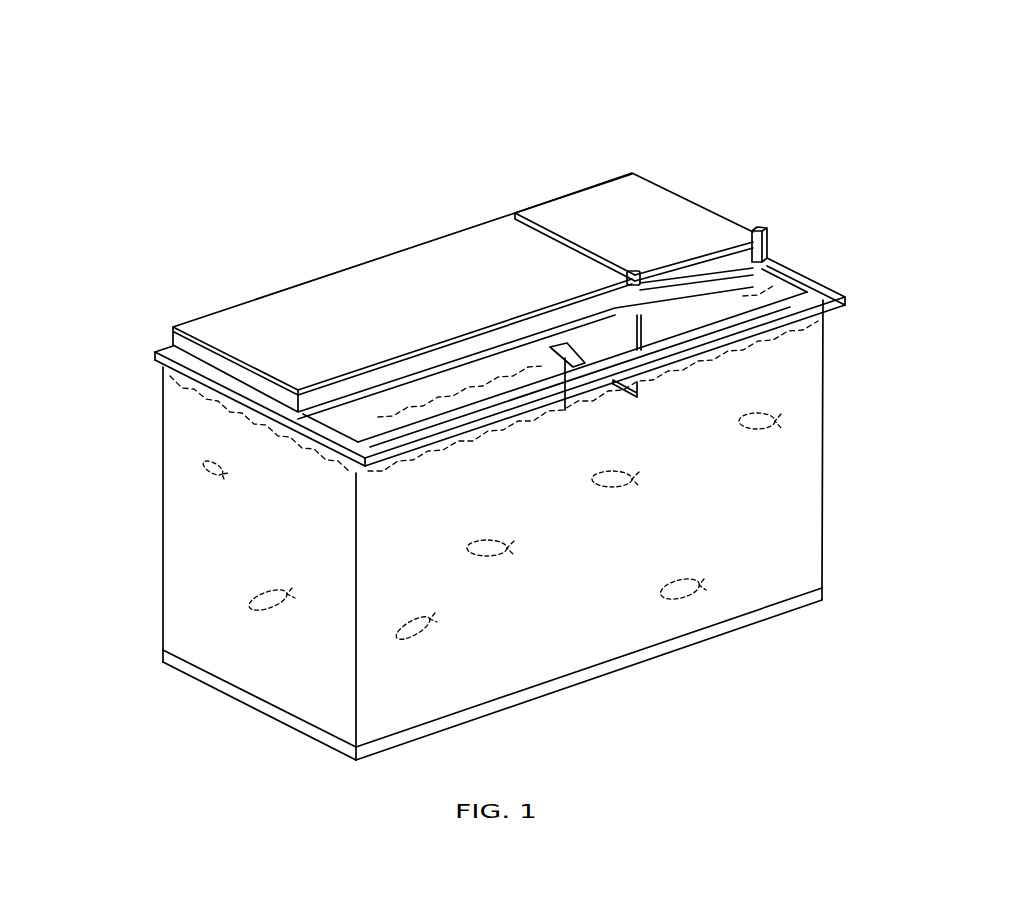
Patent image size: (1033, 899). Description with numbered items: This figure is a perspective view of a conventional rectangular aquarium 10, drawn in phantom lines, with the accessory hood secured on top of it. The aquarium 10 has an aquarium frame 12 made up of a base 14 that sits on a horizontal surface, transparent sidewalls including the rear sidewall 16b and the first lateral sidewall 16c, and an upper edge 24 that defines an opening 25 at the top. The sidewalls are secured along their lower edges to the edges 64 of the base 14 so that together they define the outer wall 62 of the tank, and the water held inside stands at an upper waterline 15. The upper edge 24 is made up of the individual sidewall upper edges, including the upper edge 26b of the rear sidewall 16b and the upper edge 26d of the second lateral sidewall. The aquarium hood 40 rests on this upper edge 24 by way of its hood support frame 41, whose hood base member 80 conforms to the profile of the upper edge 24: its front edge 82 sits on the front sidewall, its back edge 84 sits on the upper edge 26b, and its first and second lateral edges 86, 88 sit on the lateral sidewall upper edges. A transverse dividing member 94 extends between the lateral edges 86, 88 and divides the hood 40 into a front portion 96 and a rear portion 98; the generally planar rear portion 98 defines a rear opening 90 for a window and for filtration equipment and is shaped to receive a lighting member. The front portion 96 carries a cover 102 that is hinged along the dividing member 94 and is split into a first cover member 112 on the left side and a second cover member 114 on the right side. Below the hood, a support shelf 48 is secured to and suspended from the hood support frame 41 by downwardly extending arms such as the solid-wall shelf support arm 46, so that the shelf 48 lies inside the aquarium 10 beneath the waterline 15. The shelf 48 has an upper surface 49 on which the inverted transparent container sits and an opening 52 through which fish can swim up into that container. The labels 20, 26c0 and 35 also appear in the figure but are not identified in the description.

The aquarium 10 is at (250, 742).
The aquarium frame 12 is at (356, 760).
The base 14 is at (608, 668).
The upper waterline 15 is at (307, 460).
The rear sidewall 16b is at (665, 618).
The first lateral sidewall 16c is at (173, 550).
The lid 20 is at (208, 312).
The upper edge 24 is at (210, 388).
The opening 25 is at (377, 403).
The upper edge of rear sidewall 26b is at (528, 408).
The rim side section 26c0 is at (257, 410).
The upper edge of second lateral sidewall 26d is at (798, 283).
The water 35 is at (483, 378).
The aquarium hood 40 is at (502, 250).
The hood support frame 41 is at (693, 345).
The shelf support arm 46 is at (735, 300).
The support shelf 48 is at (566, 410).
The upper surface 49 is at (583, 362).
The opening 52 is at (628, 340).
The outer wall 62 is at (405, 688).
The edges 64 is at (323, 737).
The hood base member 80 is at (788, 317).
The front edge 82 is at (153, 348).
The back edge 84 is at (605, 372).
The first lateral edge 86 is at (297, 432).
The second lateral edge 88 is at (773, 262).
The rear opening 90 is at (547, 360).
The transverse dividing member 94 is at (354, 408).
The front portion 96 is at (177, 370).
The rear portion 98 is at (357, 465).
The cover 102 is at (253, 318).
The first cover member 112 is at (375, 255).
The second cover member 114 is at (618, 183).